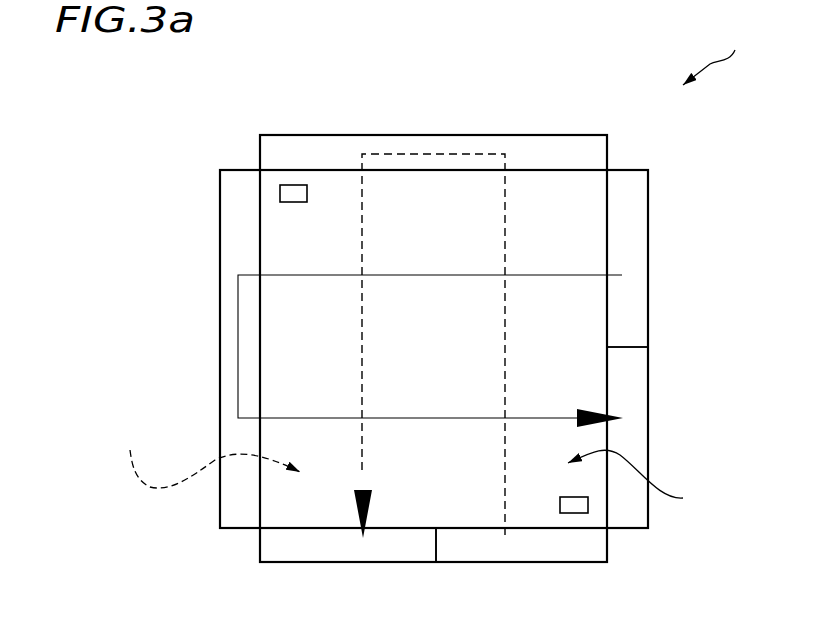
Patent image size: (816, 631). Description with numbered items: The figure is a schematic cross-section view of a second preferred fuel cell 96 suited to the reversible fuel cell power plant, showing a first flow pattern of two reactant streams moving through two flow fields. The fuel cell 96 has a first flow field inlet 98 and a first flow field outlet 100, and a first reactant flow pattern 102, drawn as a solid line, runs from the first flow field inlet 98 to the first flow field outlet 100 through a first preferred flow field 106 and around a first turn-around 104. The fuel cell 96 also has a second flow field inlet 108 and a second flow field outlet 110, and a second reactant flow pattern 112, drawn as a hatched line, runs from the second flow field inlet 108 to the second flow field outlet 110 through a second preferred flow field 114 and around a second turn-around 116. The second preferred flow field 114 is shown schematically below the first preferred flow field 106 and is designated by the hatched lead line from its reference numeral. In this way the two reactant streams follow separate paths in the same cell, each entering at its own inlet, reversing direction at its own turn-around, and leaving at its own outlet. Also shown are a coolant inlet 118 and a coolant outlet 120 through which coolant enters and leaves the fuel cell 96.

The second preferred fuel cell 96 is at (715, 55).
The first flow field inlet 98 is at (632, 228).
The first flow field outlet 100 is at (632, 398).
The first reactant flow pattern 102 is at (438, 275).
The first turn-around 104 is at (240, 250).
The first preferred flow field 106 is at (648, 479).
The second flow field inlet 108 is at (523, 547).
The second flow field outlet 110 is at (346, 546).
The second reactant flow pattern 112 is at (363, 372).
The second preferred flow field 114 is at (206, 456).
The second turn-around 116 is at (335, 138).
The coolant inlet 118 is at (585, 508).
The coolant outlet 120 is at (283, 188).